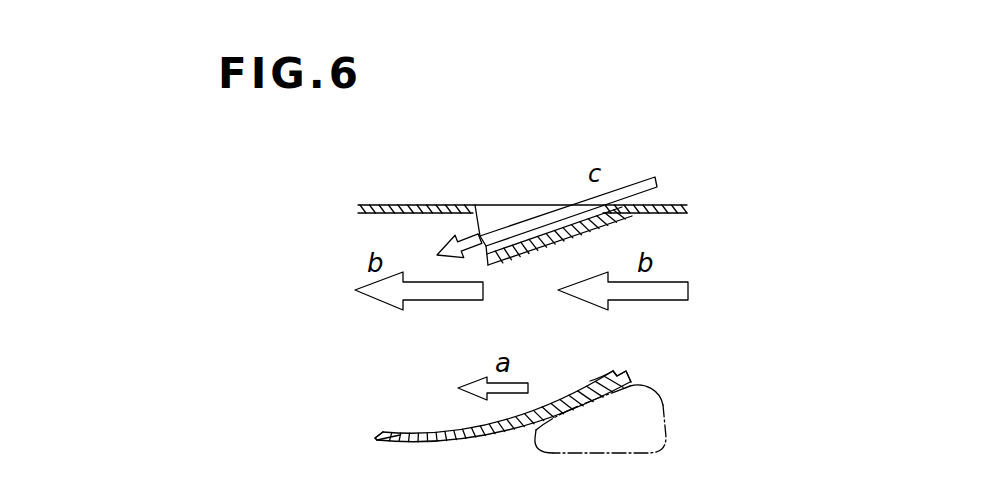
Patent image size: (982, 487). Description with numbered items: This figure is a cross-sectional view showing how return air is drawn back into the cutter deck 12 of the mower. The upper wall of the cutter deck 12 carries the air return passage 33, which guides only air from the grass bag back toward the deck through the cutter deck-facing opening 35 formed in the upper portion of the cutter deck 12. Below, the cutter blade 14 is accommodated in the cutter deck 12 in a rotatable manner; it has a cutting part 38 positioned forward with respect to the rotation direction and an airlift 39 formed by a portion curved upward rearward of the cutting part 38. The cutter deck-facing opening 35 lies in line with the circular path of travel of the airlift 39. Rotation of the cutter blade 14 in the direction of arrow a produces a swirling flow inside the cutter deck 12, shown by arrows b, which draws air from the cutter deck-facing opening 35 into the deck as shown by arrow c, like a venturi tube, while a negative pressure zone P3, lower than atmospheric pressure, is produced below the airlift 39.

The cutter deck 12 is at (313, 253).
The cutter blade 14 is at (403, 425).
The air return passage 33 is at (526, 188).
The cutter deck-facing opening 35 is at (476, 232).
The cutting part 38 is at (377, 438).
The airlift 39 is at (580, 390).
The negative pressure zone P3 is at (666, 418).